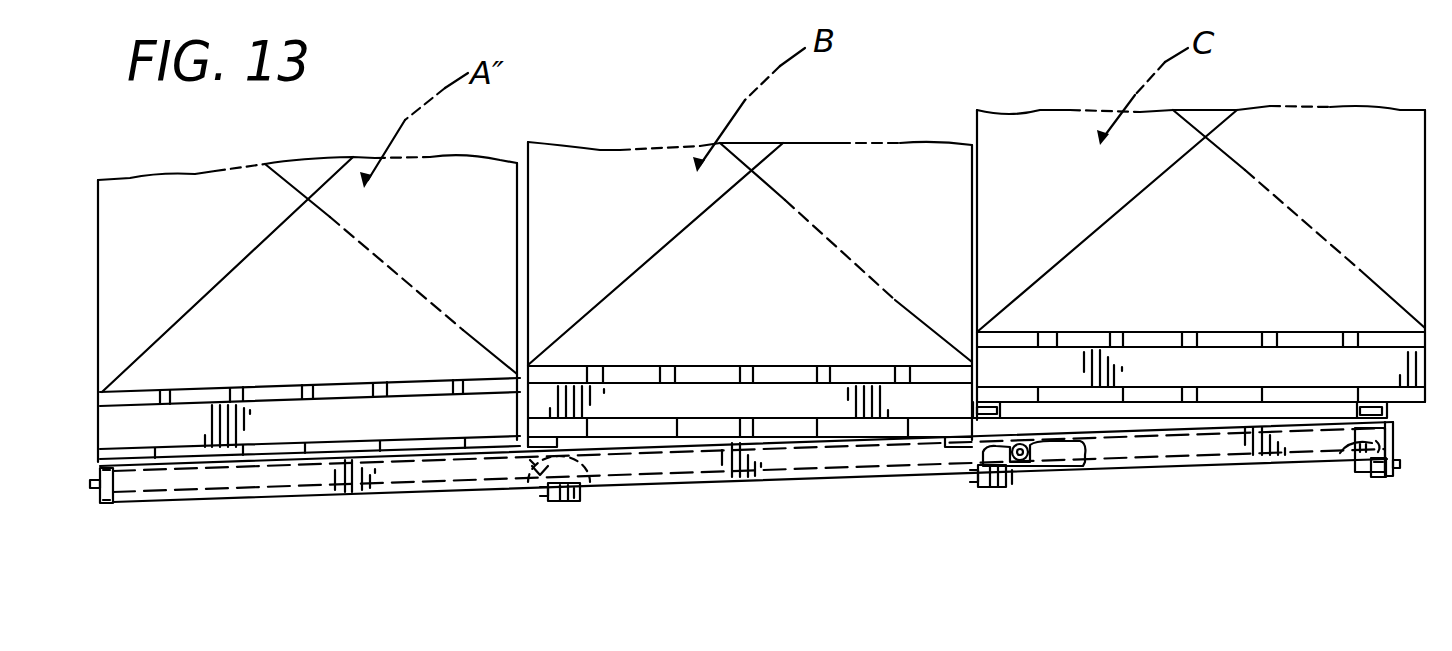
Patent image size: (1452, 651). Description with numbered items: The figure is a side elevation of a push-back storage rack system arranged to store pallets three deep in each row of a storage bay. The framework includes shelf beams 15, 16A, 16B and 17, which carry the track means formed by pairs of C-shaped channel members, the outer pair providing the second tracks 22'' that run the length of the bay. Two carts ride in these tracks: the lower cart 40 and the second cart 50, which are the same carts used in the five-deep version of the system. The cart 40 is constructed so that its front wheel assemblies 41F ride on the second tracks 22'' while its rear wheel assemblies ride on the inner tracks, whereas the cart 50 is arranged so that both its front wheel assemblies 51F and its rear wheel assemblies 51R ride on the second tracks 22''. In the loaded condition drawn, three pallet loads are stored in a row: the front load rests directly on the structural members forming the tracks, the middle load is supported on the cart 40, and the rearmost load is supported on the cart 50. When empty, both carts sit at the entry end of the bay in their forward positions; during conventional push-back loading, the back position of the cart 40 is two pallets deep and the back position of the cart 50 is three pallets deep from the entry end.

The shelf beam 15 is at (105, 505).
The shelf beam 17 is at (1386, 480).
The second tracks 22'' is at (289, 514).
The lower cart 40 is at (663, 444).
The front wheel assemblies 41F is at (588, 472).
The shelf beam 16A is at (552, 502).
The shelf beam 16B is at (990, 490).
The second cart 50 is at (1158, 430).
The front wheel assemblies 51F is at (1035, 466).
The rear wheel assemblies 51R is at (1342, 453).